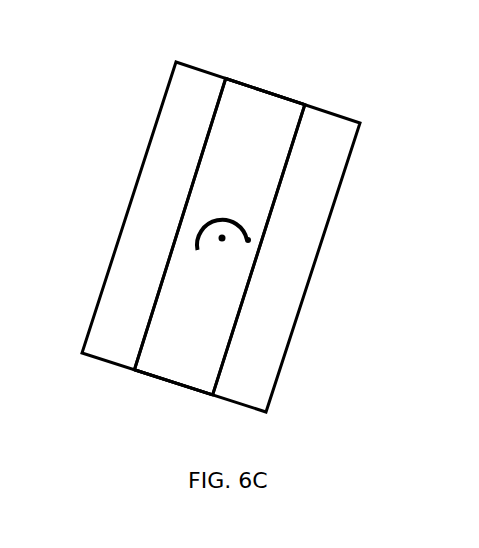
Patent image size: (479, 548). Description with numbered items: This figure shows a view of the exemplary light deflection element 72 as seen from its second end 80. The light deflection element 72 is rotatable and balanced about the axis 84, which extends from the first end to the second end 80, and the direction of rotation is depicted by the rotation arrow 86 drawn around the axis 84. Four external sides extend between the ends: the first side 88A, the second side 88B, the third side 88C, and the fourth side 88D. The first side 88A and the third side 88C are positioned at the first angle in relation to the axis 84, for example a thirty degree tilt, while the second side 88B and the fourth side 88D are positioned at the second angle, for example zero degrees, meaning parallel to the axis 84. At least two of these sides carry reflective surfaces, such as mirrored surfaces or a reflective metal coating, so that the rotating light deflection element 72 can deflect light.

The light deflection element 72 is at (382, 95).
The second end 80 is at (248, 123).
The axis 84 is at (221, 243).
The rotation arrow 86 is at (221, 218).
The first side 88A is at (113, 352).
The second side 88B is at (173, 385).
The third side 88C is at (283, 285).
The fourth side 88D is at (288, 93).